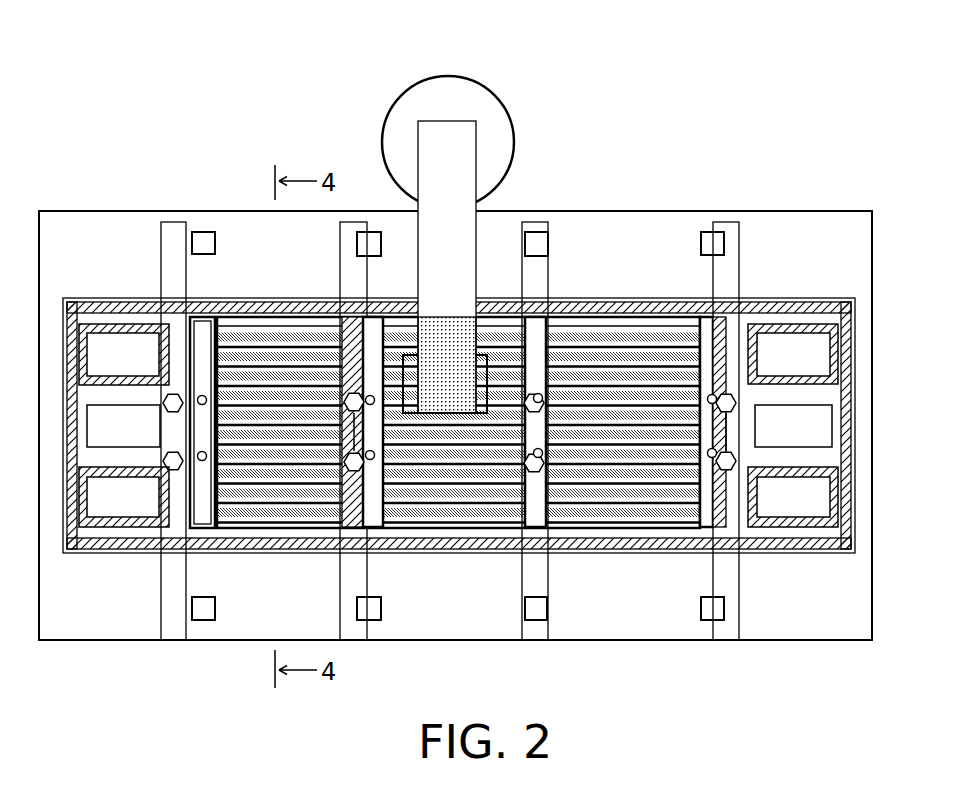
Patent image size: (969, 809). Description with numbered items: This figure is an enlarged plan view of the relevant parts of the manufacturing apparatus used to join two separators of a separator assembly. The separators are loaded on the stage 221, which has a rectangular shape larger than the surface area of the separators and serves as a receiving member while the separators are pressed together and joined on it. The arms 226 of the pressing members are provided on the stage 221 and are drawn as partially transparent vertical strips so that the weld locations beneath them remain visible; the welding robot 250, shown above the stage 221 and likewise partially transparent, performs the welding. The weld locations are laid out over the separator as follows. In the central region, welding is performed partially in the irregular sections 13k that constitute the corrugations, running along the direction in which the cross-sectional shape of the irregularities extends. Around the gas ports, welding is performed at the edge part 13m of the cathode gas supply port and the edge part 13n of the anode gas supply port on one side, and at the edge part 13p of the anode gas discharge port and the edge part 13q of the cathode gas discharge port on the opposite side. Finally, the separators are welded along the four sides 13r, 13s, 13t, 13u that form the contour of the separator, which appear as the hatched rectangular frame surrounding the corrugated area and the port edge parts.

The welding robot 250 is at (493, 88).
The arms 226 is at (172, 231).
The stage 221 is at (605, 238).
The side of separator 13r is at (510, 307).
The side of separator 13s is at (70, 334).
The side of separator 13u is at (844, 316).
The side of separator 13t is at (455, 553).
The irregular sections 13k is at (230, 328).
The edge part of cathode gas supply port 13m is at (126, 326).
The edge part of anode gas supply port 13n is at (127, 520).
The edge part of anode gas discharge port 13p is at (768, 326).
The edge part of cathode gas discharge port 13q is at (771, 521).